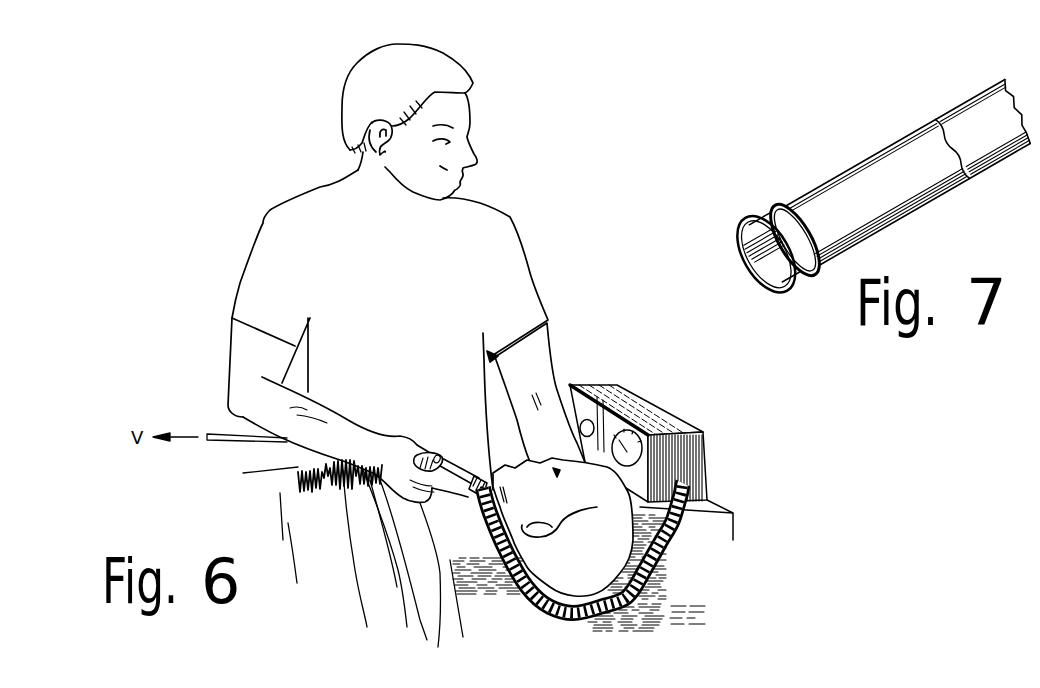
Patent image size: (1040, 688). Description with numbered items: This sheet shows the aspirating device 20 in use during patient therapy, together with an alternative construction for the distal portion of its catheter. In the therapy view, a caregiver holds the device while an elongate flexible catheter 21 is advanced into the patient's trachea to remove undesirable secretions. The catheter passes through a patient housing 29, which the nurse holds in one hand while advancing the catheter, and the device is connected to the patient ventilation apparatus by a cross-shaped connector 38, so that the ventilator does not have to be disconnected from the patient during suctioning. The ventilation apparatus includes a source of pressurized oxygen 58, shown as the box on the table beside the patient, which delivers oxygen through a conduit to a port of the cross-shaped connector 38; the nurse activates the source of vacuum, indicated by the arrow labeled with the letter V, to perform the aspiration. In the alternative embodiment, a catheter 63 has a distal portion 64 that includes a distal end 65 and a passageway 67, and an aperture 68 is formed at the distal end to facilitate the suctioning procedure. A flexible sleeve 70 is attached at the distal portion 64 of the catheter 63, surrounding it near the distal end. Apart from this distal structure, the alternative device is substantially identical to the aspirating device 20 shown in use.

In FIG. 6, the aspirating device 20 is at (479, 485).
In FIG. 6, the elongate flexible catheter 21 is at (470, 478).
In FIG. 6, the patient housing 29 is at (477, 491).
In FIG. 6, the cross-shaped connector 38 is at (478, 498).
In FIG. 6, the source of pressurized oxygen 58 is at (663, 410).
In FIG. 7, the catheter 63 is at (988, 137).
In FIG. 7, the distal portion 64 is at (973, 97).
In FIG. 7, the distal end 65 is at (783, 213).
In FIG. 7, the passageway 67 is at (765, 248).
In FIG. 7, the aperture 68 is at (748, 275).
In FIG. 7, the flexible sleeve 70 is at (873, 167).